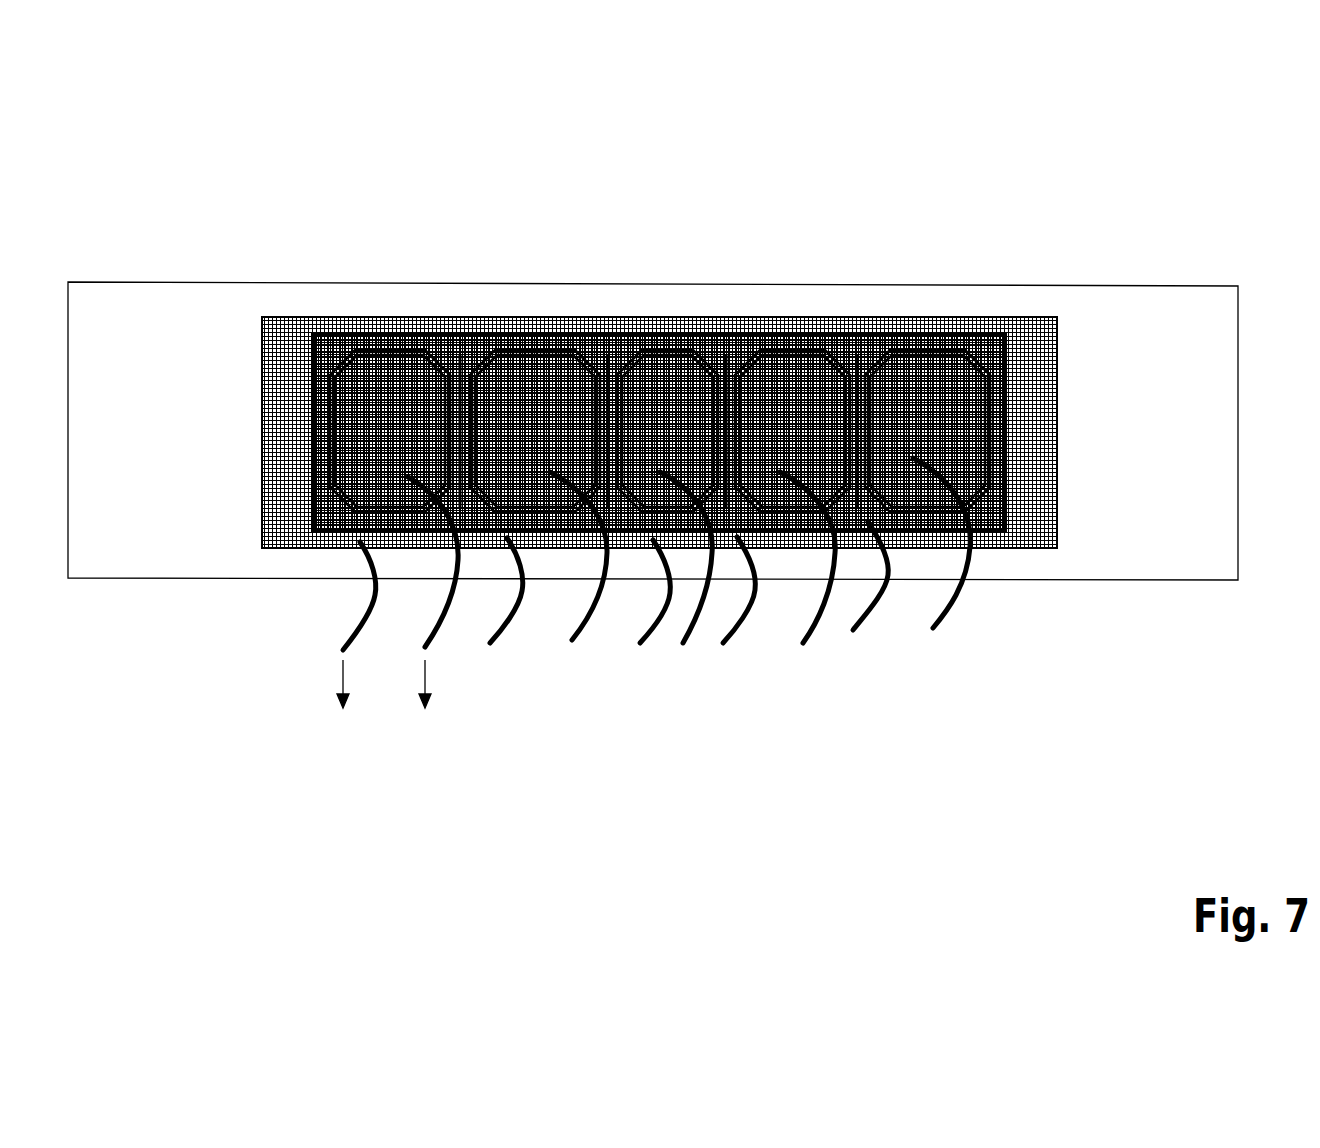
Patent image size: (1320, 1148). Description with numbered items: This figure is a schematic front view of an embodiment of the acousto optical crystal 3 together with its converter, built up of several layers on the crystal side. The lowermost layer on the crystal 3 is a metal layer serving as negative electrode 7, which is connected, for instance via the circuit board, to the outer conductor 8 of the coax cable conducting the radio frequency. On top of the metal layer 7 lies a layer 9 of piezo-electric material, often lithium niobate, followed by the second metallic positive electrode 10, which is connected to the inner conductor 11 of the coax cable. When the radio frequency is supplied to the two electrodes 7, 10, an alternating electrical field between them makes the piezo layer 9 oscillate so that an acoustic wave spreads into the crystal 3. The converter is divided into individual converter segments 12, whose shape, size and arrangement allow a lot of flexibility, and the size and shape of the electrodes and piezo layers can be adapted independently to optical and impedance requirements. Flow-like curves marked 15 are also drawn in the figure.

The acousto optical crystal 3 is at (148, 313).
The negative electrode 7 is at (771, 321).
The outer conductor 8 is at (342, 718).
The piezo-electric layer 9 is at (842, 333).
The positive electrode 10 is at (920, 420).
The inner conductor 11 is at (435, 715).
The converter segment 12 is at (1047, 359).
The flow paths 15 is at (590, 620).